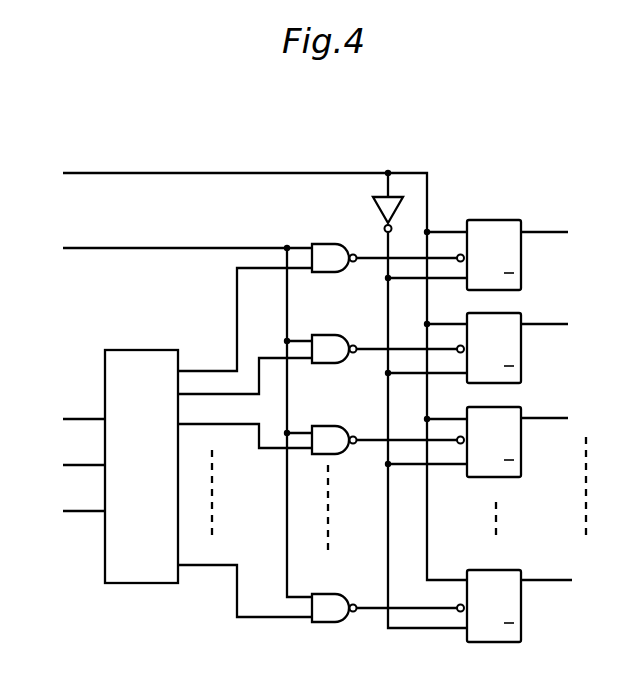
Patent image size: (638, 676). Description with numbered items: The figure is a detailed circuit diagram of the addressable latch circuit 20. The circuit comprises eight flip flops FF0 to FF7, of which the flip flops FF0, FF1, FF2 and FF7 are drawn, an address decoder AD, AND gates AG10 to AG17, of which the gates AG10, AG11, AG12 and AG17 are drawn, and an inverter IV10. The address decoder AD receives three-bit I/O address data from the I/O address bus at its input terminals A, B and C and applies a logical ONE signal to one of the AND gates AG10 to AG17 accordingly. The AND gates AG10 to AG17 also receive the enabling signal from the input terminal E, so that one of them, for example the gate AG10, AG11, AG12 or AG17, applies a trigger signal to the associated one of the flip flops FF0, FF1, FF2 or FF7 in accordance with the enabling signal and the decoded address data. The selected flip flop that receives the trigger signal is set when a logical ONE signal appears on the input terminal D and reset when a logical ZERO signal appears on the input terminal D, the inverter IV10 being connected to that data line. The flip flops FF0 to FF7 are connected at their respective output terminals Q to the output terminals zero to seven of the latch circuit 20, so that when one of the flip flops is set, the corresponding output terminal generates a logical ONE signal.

The addressable latch circuit 20 is at (516, 80).
The address decoder AD is at (143, 350).
The inverter IV10 is at (395, 205).
The AND gate AG10 is at (330, 243).
The AND gate AG11 is at (336, 318).
The AND gate AG12 is at (336, 411).
The AND gate AG17 is at (326, 599).
The flip flop FF0 is at (497, 221).
The flip flop FF1 is at (502, 313).
The flip flop FF2 is at (502, 408).
The flip flop FF7 is at (503, 573).